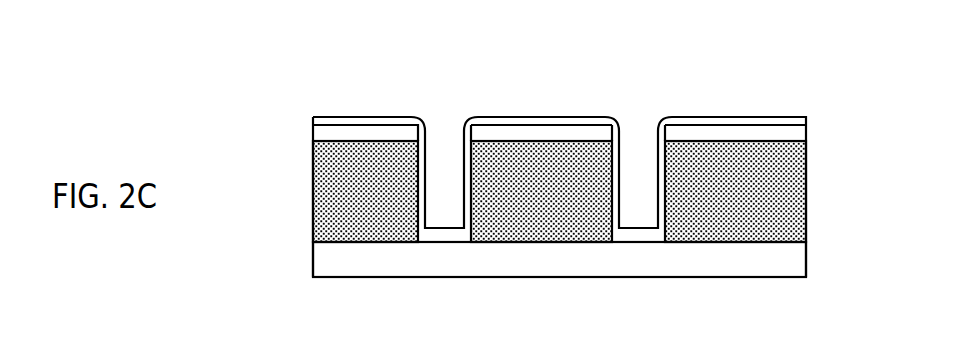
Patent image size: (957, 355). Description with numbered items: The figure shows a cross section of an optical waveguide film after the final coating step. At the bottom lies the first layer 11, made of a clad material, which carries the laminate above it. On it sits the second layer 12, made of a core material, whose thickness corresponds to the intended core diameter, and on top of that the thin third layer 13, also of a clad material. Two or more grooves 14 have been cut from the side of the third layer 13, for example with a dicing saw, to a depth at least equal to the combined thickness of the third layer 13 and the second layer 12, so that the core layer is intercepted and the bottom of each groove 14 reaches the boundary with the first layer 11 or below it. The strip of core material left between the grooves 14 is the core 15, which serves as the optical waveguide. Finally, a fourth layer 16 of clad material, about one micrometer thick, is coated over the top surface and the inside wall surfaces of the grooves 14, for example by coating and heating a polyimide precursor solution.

The first layer 11 is at (360, 260).
The second layer 12 is at (782, 192).
The third layer 13 is at (773, 133).
The grooves 14 is at (433, 162).
The core 15 is at (536, 155).
The fourth layer 16 is at (697, 118).